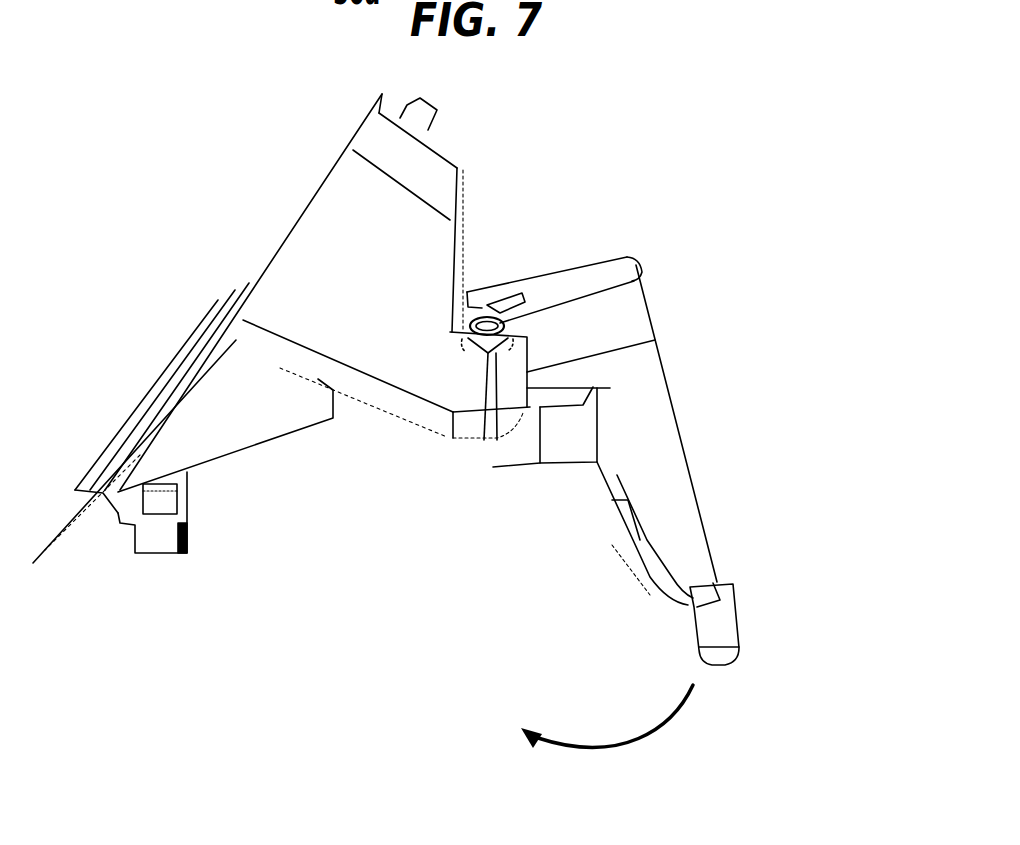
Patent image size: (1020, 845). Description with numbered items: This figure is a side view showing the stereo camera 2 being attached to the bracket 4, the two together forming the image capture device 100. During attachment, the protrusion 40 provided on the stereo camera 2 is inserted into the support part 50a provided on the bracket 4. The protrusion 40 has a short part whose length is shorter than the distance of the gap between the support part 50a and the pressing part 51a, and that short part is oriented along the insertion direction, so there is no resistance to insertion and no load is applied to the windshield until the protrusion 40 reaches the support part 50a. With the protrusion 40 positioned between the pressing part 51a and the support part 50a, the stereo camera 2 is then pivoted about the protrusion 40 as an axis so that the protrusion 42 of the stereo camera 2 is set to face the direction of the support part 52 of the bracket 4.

The image capture device 100 is at (687, 148).
The bracket 4 is at (313, 175).
The stereo camera 2 is at (693, 482).
The protrusion 40 is at (604, 287).
The protrusion 42 is at (740, 617).
The support part 50a is at (489, 357).
The pressing part 51a is at (487, 300).
The support part 52 is at (142, 557).